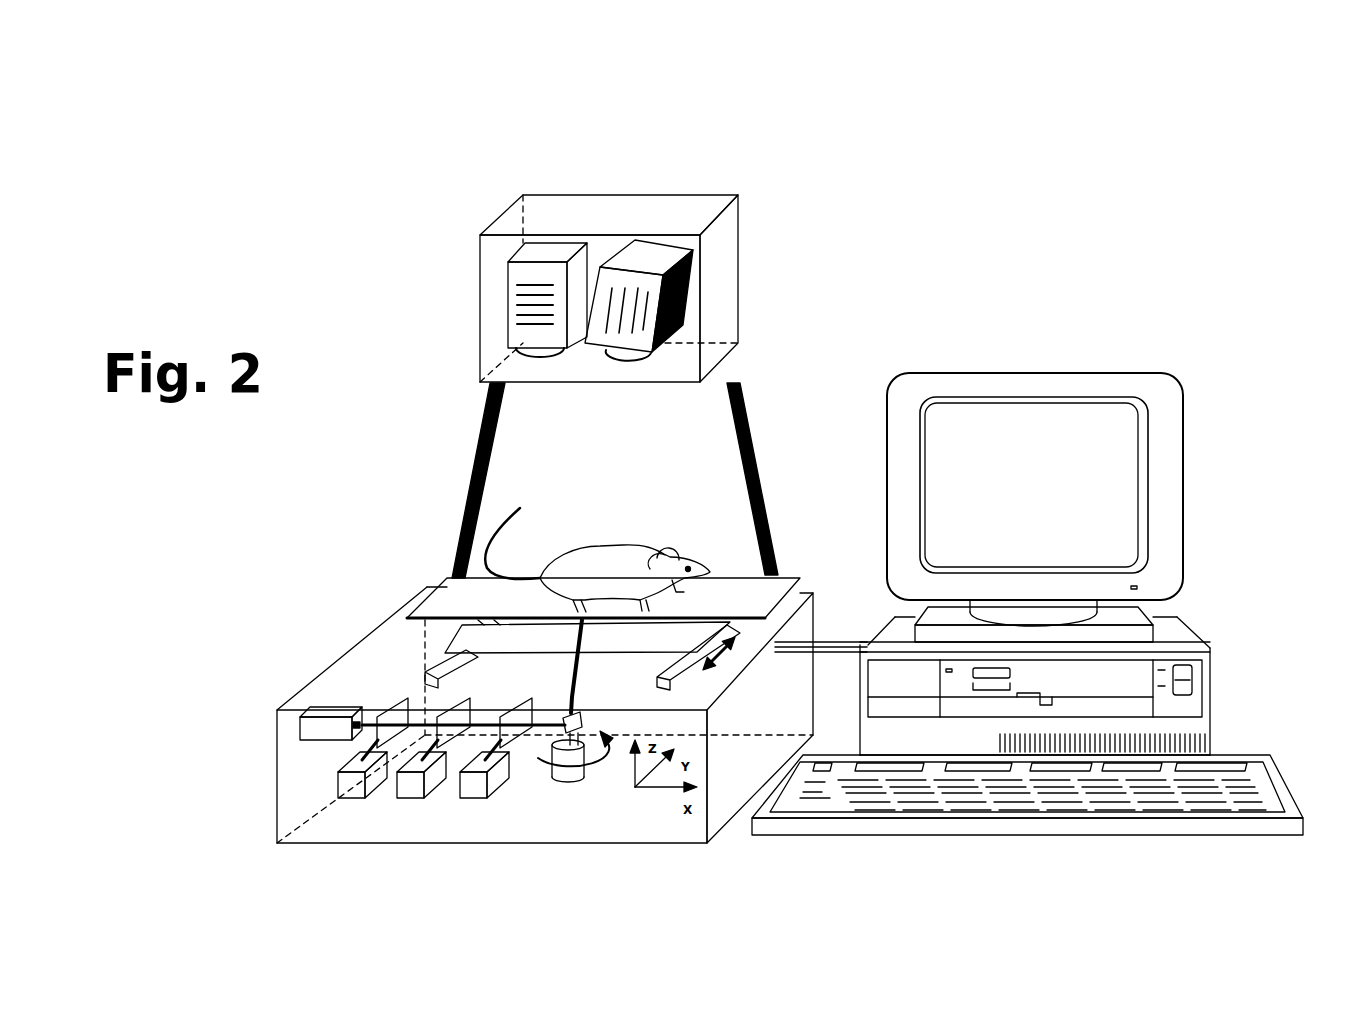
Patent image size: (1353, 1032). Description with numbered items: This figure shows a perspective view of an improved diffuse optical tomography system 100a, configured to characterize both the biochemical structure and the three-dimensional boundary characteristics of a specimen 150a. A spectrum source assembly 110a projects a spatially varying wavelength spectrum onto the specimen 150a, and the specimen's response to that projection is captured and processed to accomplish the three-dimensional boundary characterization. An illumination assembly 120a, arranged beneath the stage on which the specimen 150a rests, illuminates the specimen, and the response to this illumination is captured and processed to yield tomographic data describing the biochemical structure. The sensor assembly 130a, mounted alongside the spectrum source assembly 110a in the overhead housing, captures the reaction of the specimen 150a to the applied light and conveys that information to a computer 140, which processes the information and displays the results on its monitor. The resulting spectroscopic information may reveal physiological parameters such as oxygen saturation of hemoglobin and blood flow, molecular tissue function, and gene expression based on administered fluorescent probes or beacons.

The improved diffuse optical tomography system 100a is at (750, 140).
The spectrum source assembly 110a is at (623, 310).
The 3D sensor assembly 130a is at (528, 300).
The illumination assembly 120a is at (490, 828).
The computer 140 is at (1028, 325).
The specimen 150a is at (583, 542).